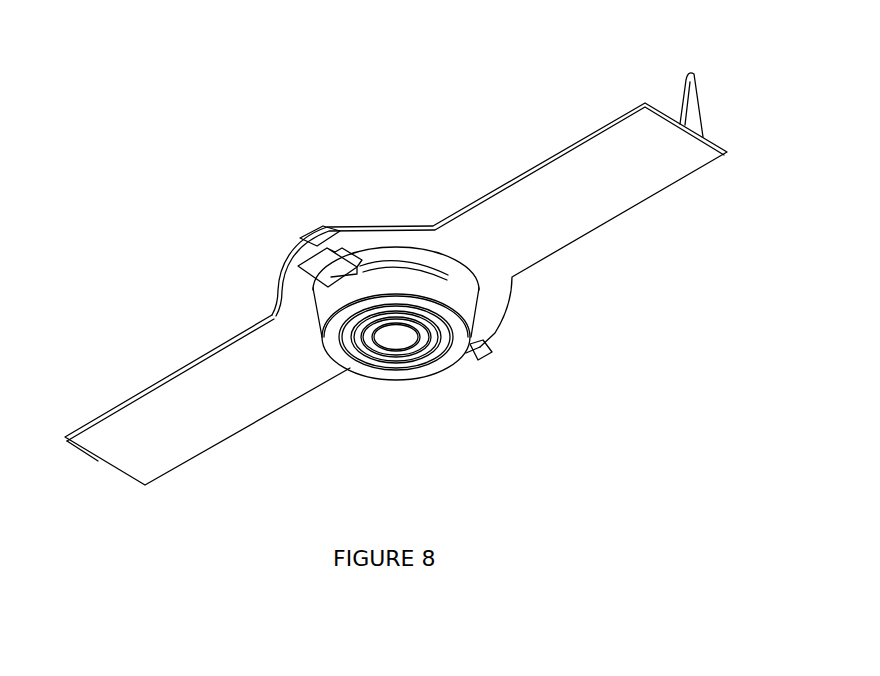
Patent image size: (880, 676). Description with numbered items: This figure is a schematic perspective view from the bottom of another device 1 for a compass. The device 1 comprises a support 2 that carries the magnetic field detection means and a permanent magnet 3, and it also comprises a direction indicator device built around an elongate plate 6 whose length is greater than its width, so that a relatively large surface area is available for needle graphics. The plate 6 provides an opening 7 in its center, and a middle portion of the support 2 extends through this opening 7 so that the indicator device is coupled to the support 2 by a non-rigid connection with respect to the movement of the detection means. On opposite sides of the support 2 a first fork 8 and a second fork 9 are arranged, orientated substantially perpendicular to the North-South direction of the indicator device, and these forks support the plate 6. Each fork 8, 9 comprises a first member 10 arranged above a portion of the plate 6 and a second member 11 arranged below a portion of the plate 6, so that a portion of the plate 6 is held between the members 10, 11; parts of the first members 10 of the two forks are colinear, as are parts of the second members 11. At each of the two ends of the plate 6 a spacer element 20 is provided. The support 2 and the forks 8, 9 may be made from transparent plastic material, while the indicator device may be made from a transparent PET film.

The device 1 is at (157, 320).
The support 2 is at (401, 247).
The permanent magnet 3 is at (327, 308).
The plate 6 is at (517, 170).
The opening 7 is at (440, 252).
The first fork 8 is at (303, 268).
The second fork 9 is at (482, 355).
The first member 10 is at (322, 224).
The second member 11 is at (335, 255).
The spacer element 20 is at (688, 78).